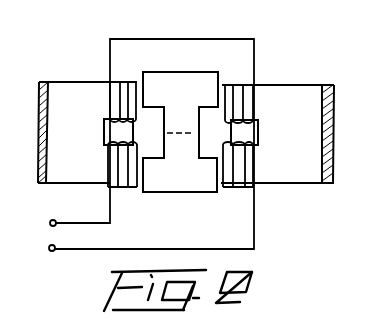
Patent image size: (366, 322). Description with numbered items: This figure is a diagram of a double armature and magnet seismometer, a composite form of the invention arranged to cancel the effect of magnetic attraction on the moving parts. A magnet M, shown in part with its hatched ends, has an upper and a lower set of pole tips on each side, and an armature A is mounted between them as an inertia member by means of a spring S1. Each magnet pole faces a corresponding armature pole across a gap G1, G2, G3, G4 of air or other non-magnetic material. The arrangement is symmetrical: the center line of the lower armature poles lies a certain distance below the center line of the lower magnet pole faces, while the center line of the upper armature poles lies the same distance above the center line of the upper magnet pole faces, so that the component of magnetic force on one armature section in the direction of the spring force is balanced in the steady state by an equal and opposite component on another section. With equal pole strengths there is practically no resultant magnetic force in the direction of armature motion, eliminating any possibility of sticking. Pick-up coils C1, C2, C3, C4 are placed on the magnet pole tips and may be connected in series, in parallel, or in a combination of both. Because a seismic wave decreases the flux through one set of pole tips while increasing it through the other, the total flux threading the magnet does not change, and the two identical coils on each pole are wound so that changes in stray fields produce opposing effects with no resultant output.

The magnet M is at (75, 92).
The armature A is at (187, 88).
The spring S1 is at (180, 135).
The pick-up coil C1 is at (122, 82).
The pick-up coil C2 is at (115, 185).
The pick-up coil C3 is at (239, 85).
The pick-up coil C4 is at (233, 188).
The air gap G1 is at (142, 75).
The air gap G2 is at (139, 192).
The air gap G3 is at (223, 84).
The air gap G4 is at (215, 190).